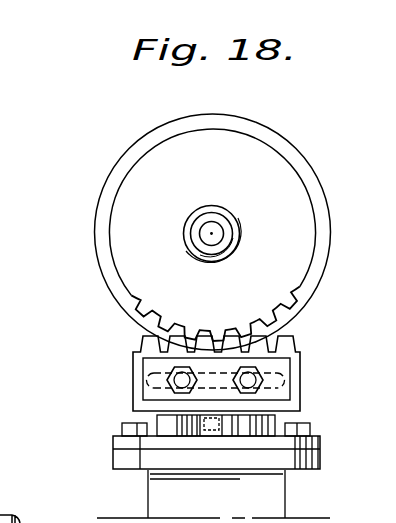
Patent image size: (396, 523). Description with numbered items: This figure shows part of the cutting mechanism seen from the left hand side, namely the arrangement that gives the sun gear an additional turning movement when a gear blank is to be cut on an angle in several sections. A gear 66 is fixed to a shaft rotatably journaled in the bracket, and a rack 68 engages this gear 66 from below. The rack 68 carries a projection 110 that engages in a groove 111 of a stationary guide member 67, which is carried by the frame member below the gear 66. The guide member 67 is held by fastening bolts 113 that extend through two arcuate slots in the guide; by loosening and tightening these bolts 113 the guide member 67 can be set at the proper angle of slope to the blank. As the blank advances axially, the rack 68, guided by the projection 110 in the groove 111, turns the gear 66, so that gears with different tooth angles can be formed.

The gear 66 is at (285, 192).
The rack 68 is at (152, 362).
The guide member 67 is at (320, 441).
The fastening bolts 113 is at (122, 430).
The groove 111 is at (180, 434).
The projection 110 is at (204, 432).